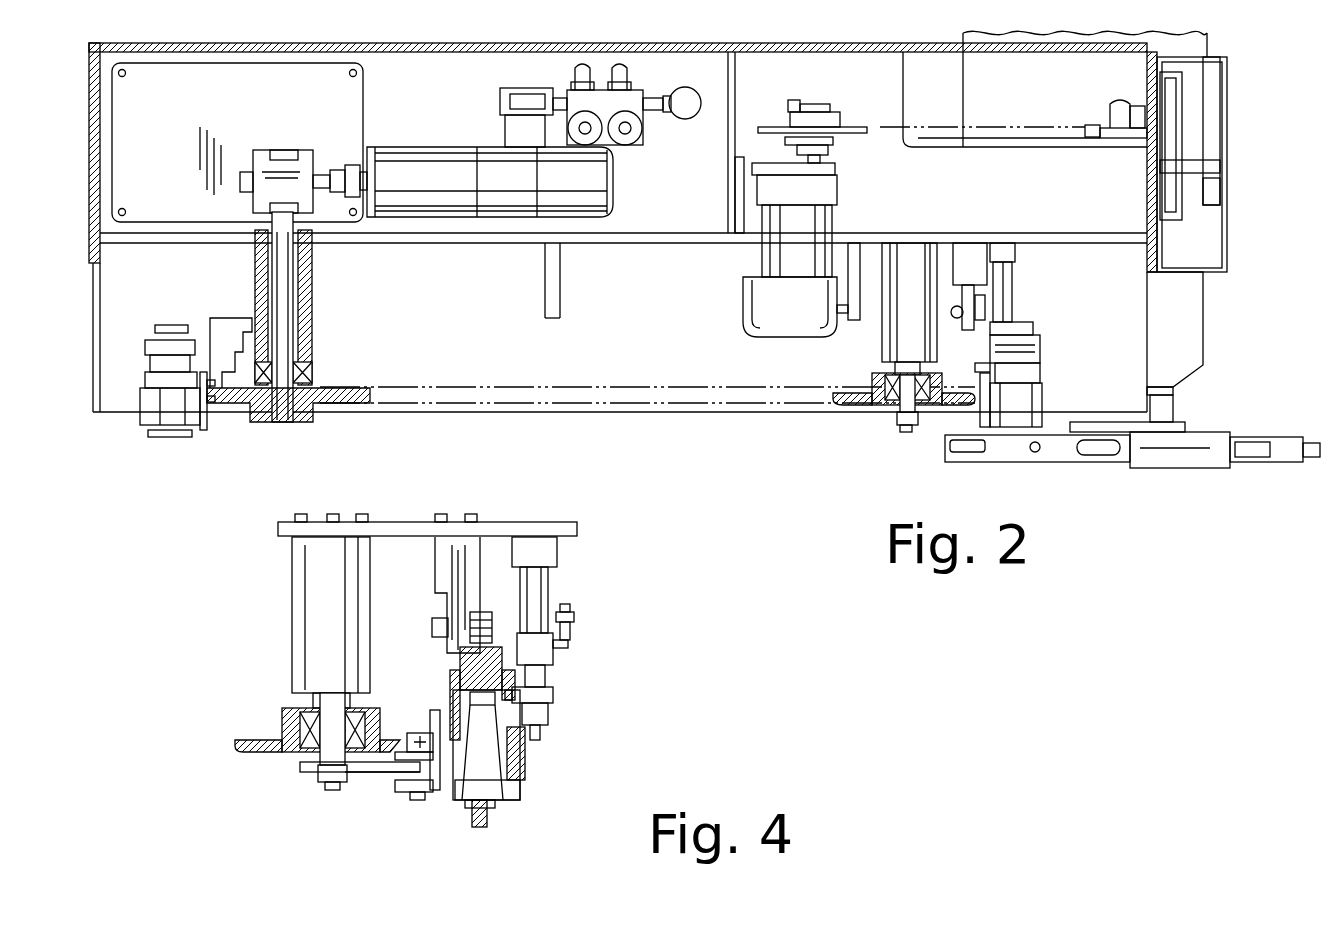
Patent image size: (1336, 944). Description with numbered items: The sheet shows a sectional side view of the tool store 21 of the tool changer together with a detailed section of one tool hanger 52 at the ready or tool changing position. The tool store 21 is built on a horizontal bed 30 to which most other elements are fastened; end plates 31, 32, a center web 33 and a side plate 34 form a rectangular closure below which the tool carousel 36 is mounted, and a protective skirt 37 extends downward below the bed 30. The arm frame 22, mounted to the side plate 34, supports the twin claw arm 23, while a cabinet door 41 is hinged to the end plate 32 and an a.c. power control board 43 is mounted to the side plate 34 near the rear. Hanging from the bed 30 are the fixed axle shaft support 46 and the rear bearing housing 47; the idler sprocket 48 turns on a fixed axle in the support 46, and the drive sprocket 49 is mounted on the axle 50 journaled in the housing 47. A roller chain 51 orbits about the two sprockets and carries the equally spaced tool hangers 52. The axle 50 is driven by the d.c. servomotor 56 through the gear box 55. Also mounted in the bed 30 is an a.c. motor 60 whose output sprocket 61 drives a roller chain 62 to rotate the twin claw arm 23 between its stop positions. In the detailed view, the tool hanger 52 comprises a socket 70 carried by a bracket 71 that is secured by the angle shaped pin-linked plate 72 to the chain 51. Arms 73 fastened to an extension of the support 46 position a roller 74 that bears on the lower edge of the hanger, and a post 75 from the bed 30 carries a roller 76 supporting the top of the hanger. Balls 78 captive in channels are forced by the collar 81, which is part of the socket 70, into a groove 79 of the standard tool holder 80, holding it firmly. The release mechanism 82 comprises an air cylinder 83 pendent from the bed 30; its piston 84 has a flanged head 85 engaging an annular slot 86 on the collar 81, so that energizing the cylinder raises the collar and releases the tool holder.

In FIG. 2, the tool store 21 is at (1242, 108).
In FIG. 2, the arm frame 22 is at (1182, 46).
In FIG. 2, the twin claw arm 23 is at (1235, 378).
In FIG. 2, the horizontal bed 30 is at (178, 233).
In FIG. 4, the horizontal bed 30 is at (402, 522).
In FIG. 2, the end plate 31 is at (100, 160).
In FIG. 2, the end plate 32 is at (1147, 80).
In FIG. 2, the center web 33 is at (739, 157).
In FIG. 2, the side plate 34 is at (644, 194).
In FIG. 2, the tool carousel 36 is at (748, 415).
In FIG. 2, the protective skirt 37 is at (93, 300).
In FIG. 2, the cabinet door 41 is at (1228, 258).
In FIG. 2, the a.c. power control board 43 is at (189, 108).
In FIG. 2, the fixed axle shaft support 46 is at (880, 330).
In FIG. 4, the fixed axle shaft support 46 is at (312, 606).
In FIG. 2, the rear bearing housing 47 is at (312, 270).
In FIG. 2, the idler sprocket 48 is at (940, 408).
In FIG. 4, the idler sprocket 48 is at (265, 740).
In FIG. 2, the drive sprocket 49 is at (329, 390).
In FIG. 2, the axle 50 is at (283, 300).
In FIG. 2, the roller chain 51 is at (442, 387).
In FIG. 4, the roller chain 51 is at (400, 772).
In FIG. 4, the tool hanger 52 is at (525, 795).
In FIG. 2, the gear box 55 is at (268, 150).
In FIG. 2, the d.c. servomotor 56 is at (424, 194).
In FIG. 2, the a.c. motor 60 is at (790, 320).
In FIG. 2, the output sprocket 61 is at (852, 136).
In FIG. 2, the roller chain 62 is at (895, 136).
In FIG. 4, the socket 70 is at (495, 810).
In FIG. 4, the bracket 71 is at (437, 790).
In FIG. 4, the pin-linked plate 72 is at (420, 760).
In FIG. 4, the arms 73 is at (318, 768).
In FIG. 4, the roller 74 is at (410, 800).
In FIG. 4, the post 75 is at (470, 565).
In FIG. 4, the roller 76 is at (492, 617).
In FIG. 4, the balls 78 is at (525, 754).
In FIG. 4, the groove 79 is at (548, 710).
In FIG. 4, the tool holder 80 is at (520, 785).
In FIG. 4, the collar 81 is at (458, 665).
In FIG. 4, the release mechanism 82 is at (575, 555).
In FIG. 2, the air cylinder 83 is at (1013, 282).
In FIG. 4, the air cylinder 83 is at (545, 585).
In FIG. 4, the piston 84 is at (553, 672).
In FIG. 4, the flanged head 85 is at (553, 694).
In FIG. 4, the annular slot 86 is at (453, 700).